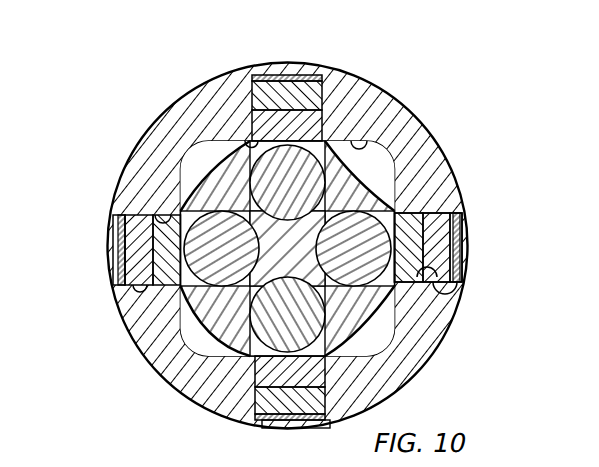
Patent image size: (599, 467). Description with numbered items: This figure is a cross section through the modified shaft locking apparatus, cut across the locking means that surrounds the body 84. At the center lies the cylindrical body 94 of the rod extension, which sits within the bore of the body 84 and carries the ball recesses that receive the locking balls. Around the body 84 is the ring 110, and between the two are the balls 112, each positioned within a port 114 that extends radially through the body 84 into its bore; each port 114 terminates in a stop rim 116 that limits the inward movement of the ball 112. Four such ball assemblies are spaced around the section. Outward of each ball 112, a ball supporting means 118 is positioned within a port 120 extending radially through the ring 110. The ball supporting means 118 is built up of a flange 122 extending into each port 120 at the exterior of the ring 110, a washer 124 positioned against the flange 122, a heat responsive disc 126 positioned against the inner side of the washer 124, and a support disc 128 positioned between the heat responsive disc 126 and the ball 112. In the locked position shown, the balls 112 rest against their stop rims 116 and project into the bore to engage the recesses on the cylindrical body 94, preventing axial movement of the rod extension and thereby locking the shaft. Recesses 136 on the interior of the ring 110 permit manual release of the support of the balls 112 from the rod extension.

The ring 110 is at (164, 113).
The balls 112 is at (323, 120).
The ports 114 is at (253, 80).
The stop rim 116 is at (292, 75).
The ball supporting means 118 is at (461, 246).
The ports 120 is at (155, 218).
The flange 122 is at (113, 233).
The washer 124 is at (116, 277).
The heat responsive disc 126 is at (133, 292).
The support disc 128 is at (181, 288).
The recesses 136 is at (366, 143).
The body 84 is at (366, 178).
The cylindrical body 94 is at (322, 208).